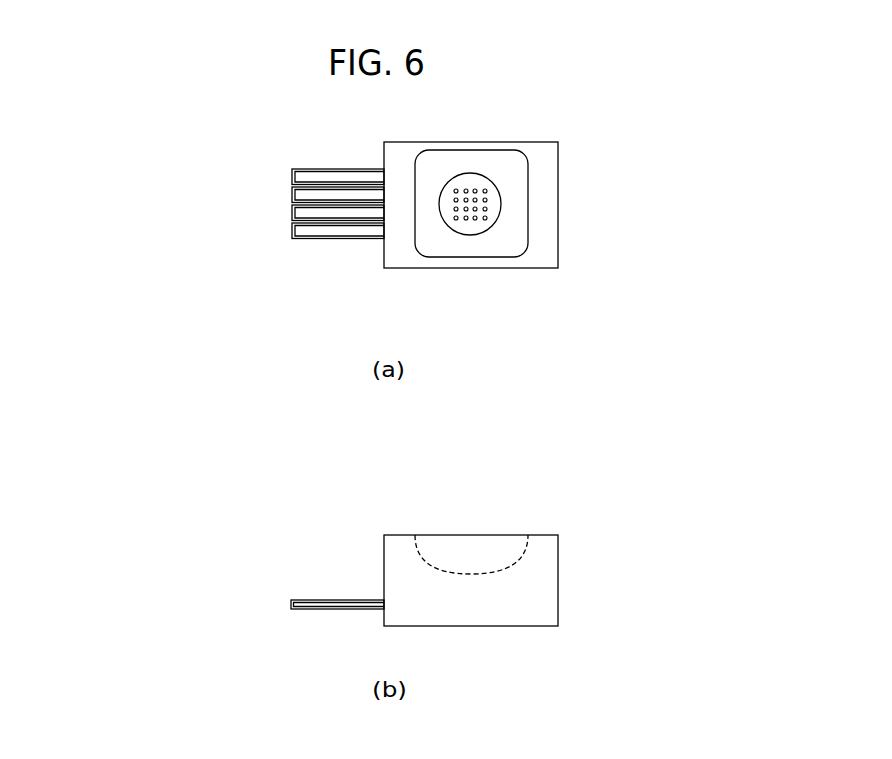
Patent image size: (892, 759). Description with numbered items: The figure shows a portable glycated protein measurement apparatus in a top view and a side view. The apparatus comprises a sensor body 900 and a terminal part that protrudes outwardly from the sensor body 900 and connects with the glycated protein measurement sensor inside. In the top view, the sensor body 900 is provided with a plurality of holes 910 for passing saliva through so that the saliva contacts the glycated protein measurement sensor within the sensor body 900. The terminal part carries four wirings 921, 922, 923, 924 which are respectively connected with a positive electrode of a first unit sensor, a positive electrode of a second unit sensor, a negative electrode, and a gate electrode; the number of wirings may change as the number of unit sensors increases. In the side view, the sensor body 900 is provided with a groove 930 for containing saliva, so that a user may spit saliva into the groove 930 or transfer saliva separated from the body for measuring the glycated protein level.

The sensor body 900 is at (543, 160).
The holes 910 is at (487, 187).
The wiring 921 is at (297, 177).
The wiring 922 is at (297, 195).
The wiring 923 is at (297, 211).
The wiring 924 is at (288, 248).
The groove 930 is at (473, 552).